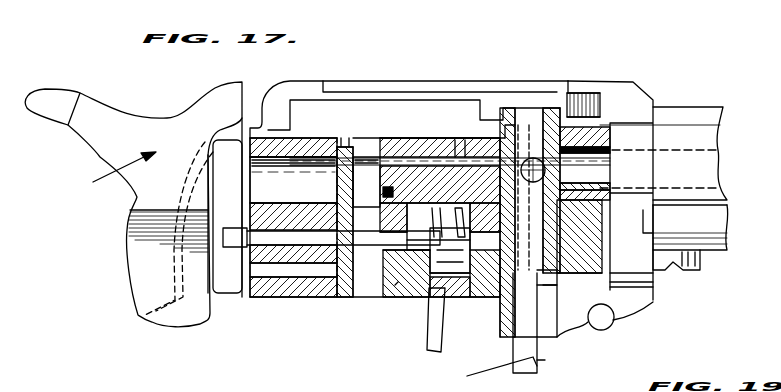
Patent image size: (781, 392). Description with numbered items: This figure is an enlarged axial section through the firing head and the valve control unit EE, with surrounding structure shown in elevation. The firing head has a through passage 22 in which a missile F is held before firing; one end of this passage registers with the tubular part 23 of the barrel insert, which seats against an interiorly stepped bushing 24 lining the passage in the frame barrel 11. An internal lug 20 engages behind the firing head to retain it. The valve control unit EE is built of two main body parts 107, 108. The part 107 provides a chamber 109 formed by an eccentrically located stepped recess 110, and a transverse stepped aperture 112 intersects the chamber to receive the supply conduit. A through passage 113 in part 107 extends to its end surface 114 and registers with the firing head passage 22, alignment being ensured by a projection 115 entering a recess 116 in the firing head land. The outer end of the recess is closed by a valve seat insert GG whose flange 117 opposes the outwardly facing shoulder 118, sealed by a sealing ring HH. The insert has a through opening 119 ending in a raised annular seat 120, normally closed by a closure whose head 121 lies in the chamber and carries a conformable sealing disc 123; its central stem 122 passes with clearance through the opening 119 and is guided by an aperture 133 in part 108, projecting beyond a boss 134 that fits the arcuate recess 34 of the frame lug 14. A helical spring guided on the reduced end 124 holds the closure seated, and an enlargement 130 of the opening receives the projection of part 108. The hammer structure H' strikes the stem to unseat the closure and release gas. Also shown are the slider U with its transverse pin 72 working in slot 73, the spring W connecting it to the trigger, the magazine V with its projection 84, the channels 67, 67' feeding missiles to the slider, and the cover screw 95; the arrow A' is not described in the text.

The hammer structure H' is at (133, 199).
The lug 14 is at (240, 166).
The arcuate recess 34 is at (240, 196).
The valve body part 108 is at (295, 142).
The central stem 122 is at (285, 212).
The enlargement 130 is at (330, 278).
The through opening 119 is at (292, 247).
The aperture 133 is at (255, 298).
The boss 134 is at (240, 257).
The frame barrel 11 is at (714, 110).
The flange 117 is at (345, 199).
The outwardly facing shoulder 118 is at (378, 140).
The valve control unit EE is at (347, 140).
The valve body part 107 is at (436, 145).
The through passage 113 is at (432, 128).
The conformable sealing disc 123 is at (412, 172).
The raised annular seat 120 is at (415, 200).
The head 121 is at (460, 148).
The reduced end 124 is at (446, 203).
The stepped recess 110 is at (432, 272).
The transverse stepped aperture 112 is at (425, 303).
The valve seat insert GG is at (374, 291).
The sealing ring HH is at (398, 286).
The end surface 114 is at (495, 290).
The chamber 109 is at (512, 320).
The missile F is at (430, 354).
The internal lug 20 is at (490, 108).
The recess 116 is at (525, 232).
The projection 115 is at (557, 277).
The transverse pin 72 is at (547, 305).
The slot 73 is at (550, 336).
The spring W is at (486, 372).
The slider U is at (543, 373).
The through passage 22 is at (570, 105).
The arrow A' is at (614, 178).
The interiorly stepped bushing 24 is at (590, 127).
The tubular part 23 is at (612, 152).
The inwardly inclined channel 67' is at (604, 176).
The channel 67 is at (628, 189).
The projection 84 is at (652, 222).
The magazine V is at (728, 222).
The screw 95 is at (614, 327).